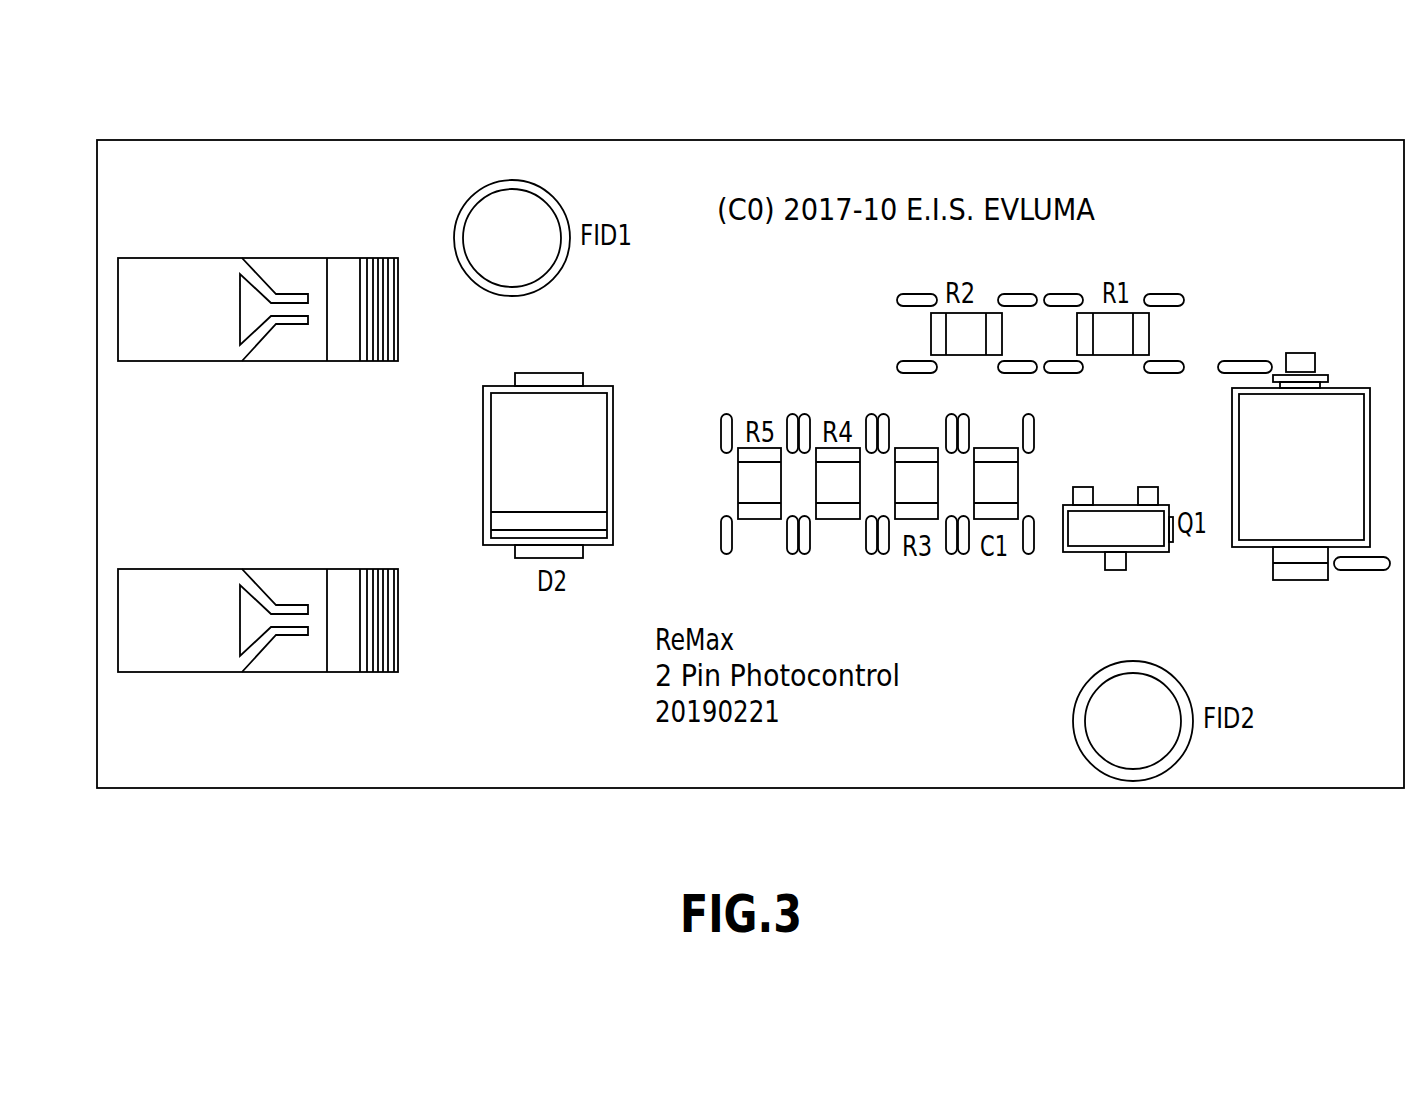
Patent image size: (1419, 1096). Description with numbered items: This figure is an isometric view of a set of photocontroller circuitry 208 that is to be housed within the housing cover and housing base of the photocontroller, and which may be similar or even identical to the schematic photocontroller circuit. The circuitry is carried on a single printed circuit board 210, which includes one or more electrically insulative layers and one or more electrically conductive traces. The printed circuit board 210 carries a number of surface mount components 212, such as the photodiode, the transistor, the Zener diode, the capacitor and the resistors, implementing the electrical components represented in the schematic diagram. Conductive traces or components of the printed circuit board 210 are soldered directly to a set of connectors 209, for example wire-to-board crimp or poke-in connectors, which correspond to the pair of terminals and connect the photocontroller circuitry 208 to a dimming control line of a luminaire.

The set of photocontroller circuitry 208 is at (750, 458).
The set of connectors 209 is at (162, 258).
The printed circuit board 210 is at (535, 750).
The surface mount components 212 is at (1338, 415).